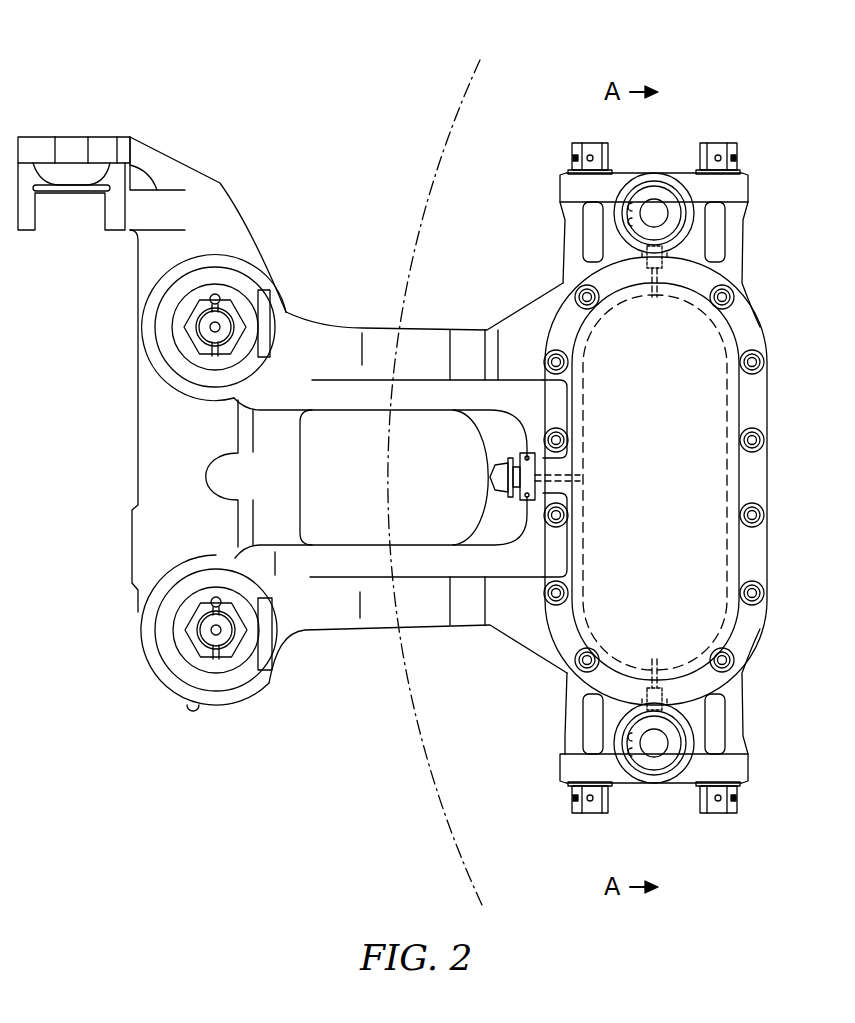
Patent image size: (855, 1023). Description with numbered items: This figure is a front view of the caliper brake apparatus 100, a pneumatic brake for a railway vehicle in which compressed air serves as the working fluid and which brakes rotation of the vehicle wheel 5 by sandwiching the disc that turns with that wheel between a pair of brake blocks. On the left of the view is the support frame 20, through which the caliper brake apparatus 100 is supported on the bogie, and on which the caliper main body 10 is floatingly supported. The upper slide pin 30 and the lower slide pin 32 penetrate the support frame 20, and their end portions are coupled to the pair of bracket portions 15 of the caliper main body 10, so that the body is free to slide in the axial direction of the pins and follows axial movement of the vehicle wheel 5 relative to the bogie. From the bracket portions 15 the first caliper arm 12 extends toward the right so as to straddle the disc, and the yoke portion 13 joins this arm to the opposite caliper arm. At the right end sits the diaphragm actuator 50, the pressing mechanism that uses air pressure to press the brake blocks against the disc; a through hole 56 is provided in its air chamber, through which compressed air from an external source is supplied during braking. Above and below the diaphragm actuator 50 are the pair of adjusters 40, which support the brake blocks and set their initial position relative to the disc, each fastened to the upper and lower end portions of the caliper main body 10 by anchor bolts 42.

The vehicle wheel 5 is at (447, 138).
The caliper main body 10 is at (530, 298).
The first caliper arm 12 is at (352, 400).
The yoke portion 13 is at (277, 473).
The bracket portion 15 is at (160, 337).
The support frame 20 is at (72, 137).
The upper slide pin 30 is at (205, 328).
The lower slide pin 32 is at (203, 628).
The adjuster 40 is at (661, 170).
The anchor bolt 42 is at (589, 143).
The diaphragm actuator 50 is at (756, 323).
The through hole 56 is at (515, 498).
The caliper brake apparatus 100 is at (757, 90).